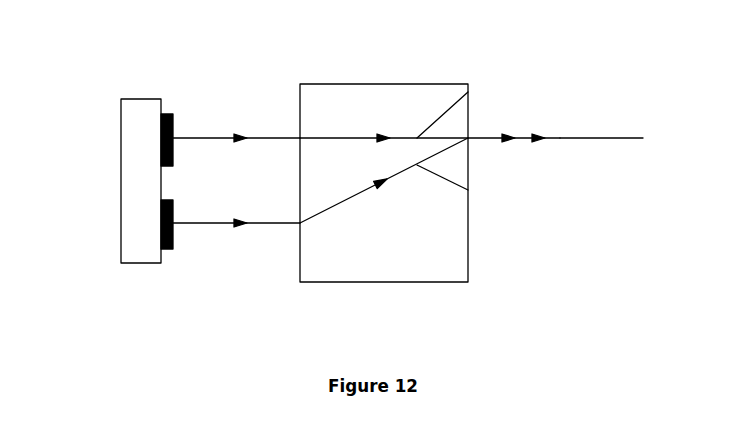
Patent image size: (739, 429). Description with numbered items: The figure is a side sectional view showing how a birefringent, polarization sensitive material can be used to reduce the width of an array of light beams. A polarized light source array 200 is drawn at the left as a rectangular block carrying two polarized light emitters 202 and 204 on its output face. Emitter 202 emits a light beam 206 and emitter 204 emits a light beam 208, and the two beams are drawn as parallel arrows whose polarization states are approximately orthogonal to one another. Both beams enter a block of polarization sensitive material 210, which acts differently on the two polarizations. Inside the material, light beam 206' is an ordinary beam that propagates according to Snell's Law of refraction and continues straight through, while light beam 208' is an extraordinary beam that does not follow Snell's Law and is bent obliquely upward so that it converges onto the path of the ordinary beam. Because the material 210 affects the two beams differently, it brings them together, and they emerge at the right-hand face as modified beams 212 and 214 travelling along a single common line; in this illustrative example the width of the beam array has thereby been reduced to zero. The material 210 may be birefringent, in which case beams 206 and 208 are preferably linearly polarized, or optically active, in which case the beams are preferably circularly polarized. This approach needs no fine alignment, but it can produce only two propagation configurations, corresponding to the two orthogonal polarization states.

The polarized light source array 200 is at (128, 187).
The polarized light emitter 202 is at (173, 118).
The polarized light emitter 204 is at (173, 249).
The light beam 206 is at (236, 96).
The light beam 208 is at (236, 269).
The polarization sensitive material 210 is at (352, 97).
The light beam (ordinary beam) 206' is at (468, 83).
The light beam (extraordinary beam) 208' is at (479, 201).
The modified beam 212 is at (548, 138).
The modified beam 214 is at (570, 138).